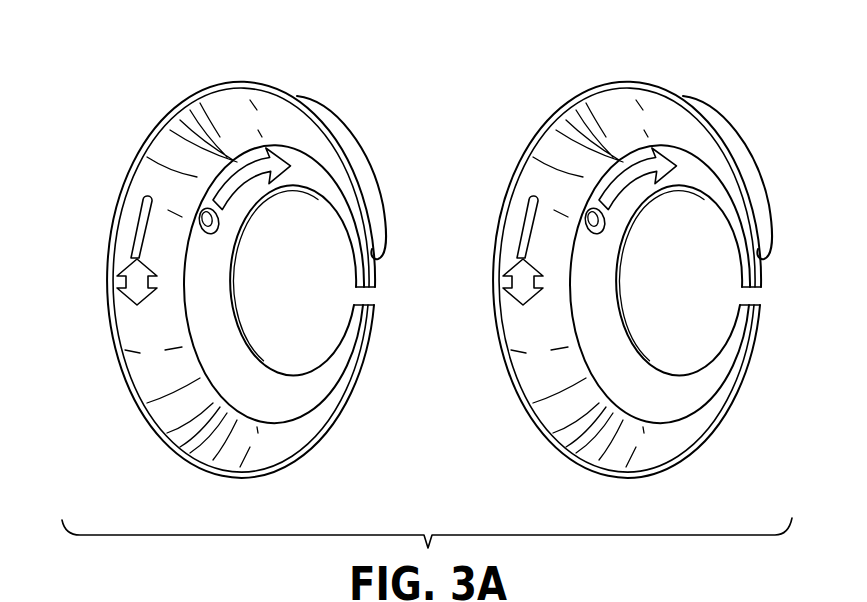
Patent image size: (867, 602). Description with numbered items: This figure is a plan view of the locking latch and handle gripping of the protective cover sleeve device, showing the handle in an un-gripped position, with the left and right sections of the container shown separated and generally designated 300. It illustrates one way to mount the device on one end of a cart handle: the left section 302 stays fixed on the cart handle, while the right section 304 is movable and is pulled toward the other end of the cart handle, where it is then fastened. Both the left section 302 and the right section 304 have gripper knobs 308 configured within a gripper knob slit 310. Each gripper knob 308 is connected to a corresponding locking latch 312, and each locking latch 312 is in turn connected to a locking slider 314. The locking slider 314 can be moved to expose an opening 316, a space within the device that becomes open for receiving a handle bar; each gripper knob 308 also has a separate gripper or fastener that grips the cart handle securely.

The separated container sections 300 is at (261, 56).
The left section 302 is at (196, 468).
The right section 304 is at (630, 481).
The gripper knob 308 is at (131, 292).
The gripper knob slit 310 is at (138, 213).
The locking latch 312 is at (216, 229).
The locking slider 314 is at (355, 148).
The opening 316 is at (308, 330).